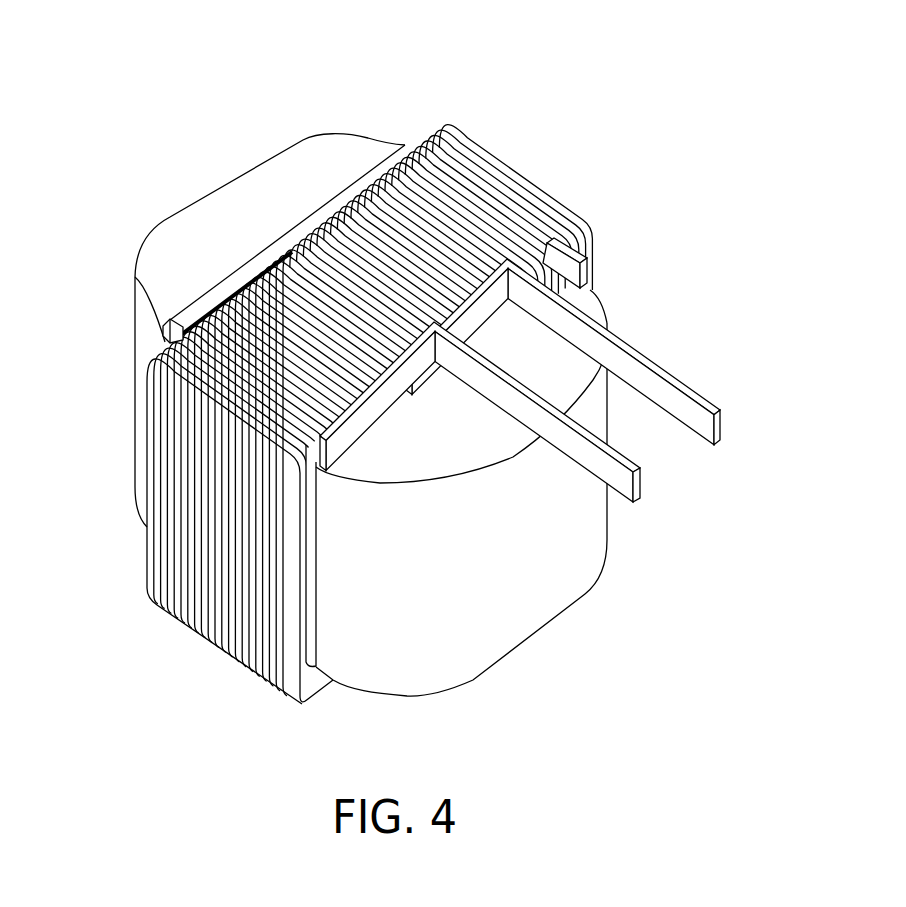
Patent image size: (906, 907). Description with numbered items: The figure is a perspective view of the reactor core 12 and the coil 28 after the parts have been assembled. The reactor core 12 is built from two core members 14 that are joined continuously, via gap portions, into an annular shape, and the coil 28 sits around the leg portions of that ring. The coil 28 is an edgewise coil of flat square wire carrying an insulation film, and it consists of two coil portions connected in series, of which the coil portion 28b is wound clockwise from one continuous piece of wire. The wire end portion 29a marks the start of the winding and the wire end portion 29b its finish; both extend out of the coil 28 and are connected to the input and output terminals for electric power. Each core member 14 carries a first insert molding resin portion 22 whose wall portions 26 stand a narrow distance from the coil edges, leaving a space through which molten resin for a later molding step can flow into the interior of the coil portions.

The reactor core 12 is at (403, 361).
The core member 14 is at (260, 150).
The first insert molding resin portion 22 is at (226, 206).
The wall portion 26 is at (176, 314).
The coil 28 is at (333, 395).
The coil portion 28b is at (162, 395).
The wire end portion 29a is at (666, 364).
The wire end portion 29b is at (636, 462).